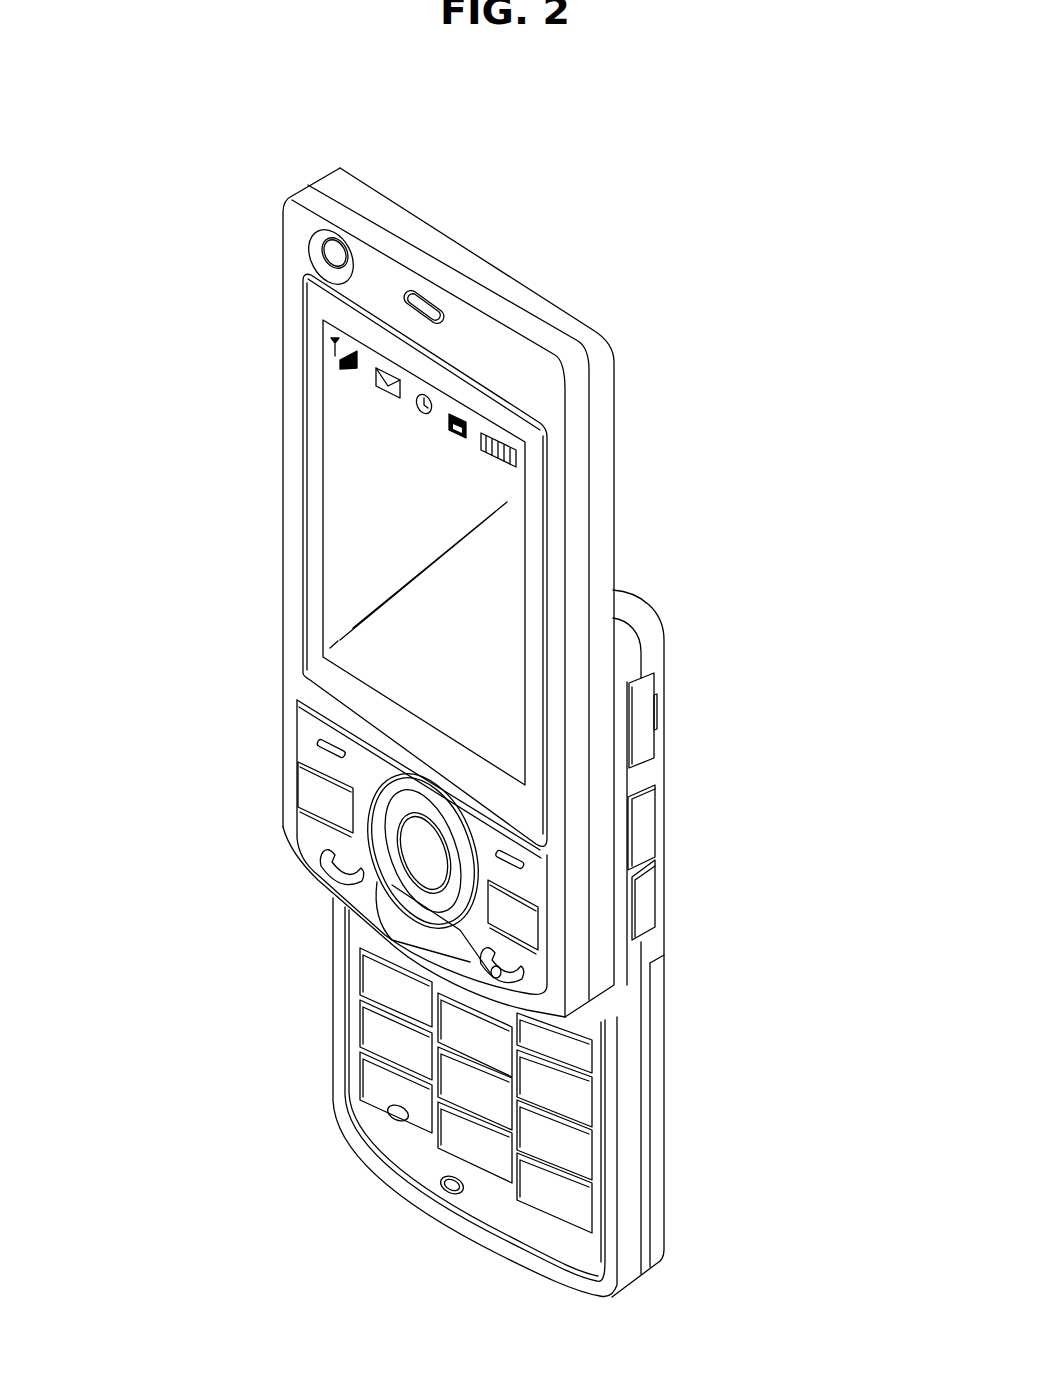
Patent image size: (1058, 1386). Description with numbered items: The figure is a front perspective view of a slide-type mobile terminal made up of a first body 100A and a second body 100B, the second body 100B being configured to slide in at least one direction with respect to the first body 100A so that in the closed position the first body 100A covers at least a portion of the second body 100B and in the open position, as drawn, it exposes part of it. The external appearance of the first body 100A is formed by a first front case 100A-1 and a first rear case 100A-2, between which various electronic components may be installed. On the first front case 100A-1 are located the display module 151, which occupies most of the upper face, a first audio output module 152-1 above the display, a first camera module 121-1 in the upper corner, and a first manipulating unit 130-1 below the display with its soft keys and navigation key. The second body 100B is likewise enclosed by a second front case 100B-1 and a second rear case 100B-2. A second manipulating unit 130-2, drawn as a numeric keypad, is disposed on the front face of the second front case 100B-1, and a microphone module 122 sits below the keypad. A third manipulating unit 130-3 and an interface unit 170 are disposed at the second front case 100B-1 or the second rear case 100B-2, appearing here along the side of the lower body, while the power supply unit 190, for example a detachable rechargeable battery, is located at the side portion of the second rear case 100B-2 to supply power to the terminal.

The first body 100A is at (230, 355).
The first front case 100A-1 is at (580, 467).
The first rear case 100A-2 is at (603, 418).
The first camera module 121-1 is at (333, 253).
The first audio output module 152-1 is at (423, 303).
The display module 151 is at (338, 482).
The first manipulating unit 130-1 is at (315, 787).
The second body 100B is at (315, 995).
The second front case 100B-1 is at (627, 638).
The second rear case 100B-2 is at (658, 670).
The interface unit 170 is at (645, 712).
The third manipulating unit 130-3 is at (650, 898).
The second manipulating unit 130-2 is at (368, 1068).
The microphone module 122 is at (453, 1194).
The power supply unit 190 is at (657, 1087).